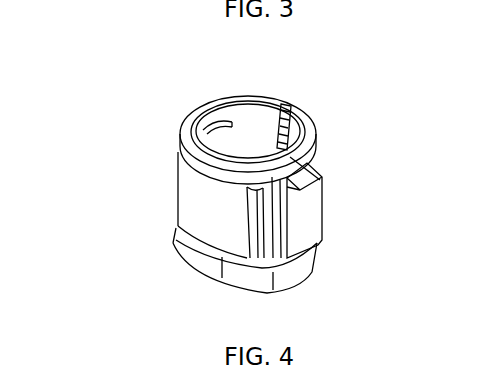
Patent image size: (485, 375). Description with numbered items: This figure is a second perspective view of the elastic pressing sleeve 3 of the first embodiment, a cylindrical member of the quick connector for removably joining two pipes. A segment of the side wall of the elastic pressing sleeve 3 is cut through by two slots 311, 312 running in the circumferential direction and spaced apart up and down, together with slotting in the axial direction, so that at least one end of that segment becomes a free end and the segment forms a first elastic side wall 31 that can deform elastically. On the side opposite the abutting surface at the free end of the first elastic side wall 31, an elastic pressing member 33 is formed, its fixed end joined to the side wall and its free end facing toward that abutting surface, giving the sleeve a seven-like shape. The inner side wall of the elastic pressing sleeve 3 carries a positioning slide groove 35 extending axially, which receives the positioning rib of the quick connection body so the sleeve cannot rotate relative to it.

The elastic pressing sleeve 3 is at (308, 106).
The first elastic side wall 31 is at (190, 197).
The slot 311 is at (178, 153).
The slot 312 is at (178, 238).
The elastic pressing member 33 is at (318, 207).
The positioning slide groove 35 is at (288, 108).